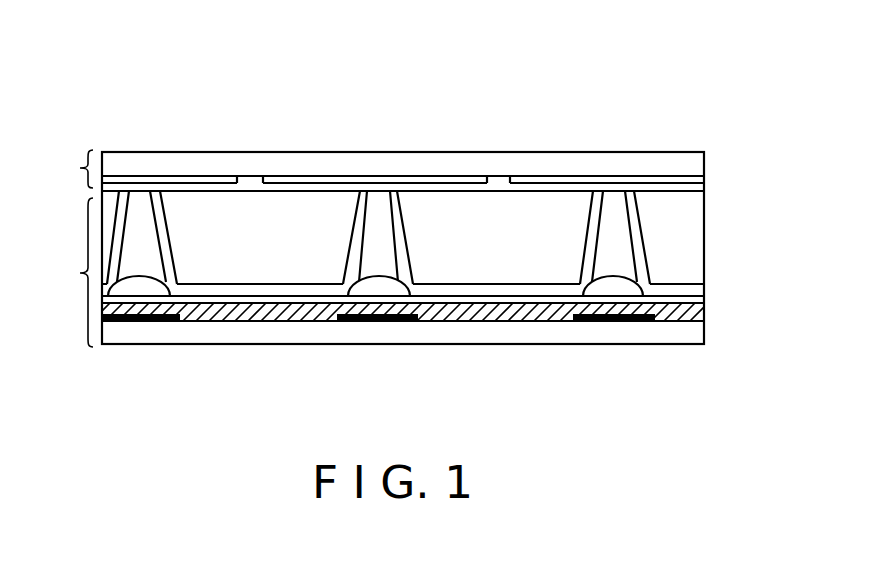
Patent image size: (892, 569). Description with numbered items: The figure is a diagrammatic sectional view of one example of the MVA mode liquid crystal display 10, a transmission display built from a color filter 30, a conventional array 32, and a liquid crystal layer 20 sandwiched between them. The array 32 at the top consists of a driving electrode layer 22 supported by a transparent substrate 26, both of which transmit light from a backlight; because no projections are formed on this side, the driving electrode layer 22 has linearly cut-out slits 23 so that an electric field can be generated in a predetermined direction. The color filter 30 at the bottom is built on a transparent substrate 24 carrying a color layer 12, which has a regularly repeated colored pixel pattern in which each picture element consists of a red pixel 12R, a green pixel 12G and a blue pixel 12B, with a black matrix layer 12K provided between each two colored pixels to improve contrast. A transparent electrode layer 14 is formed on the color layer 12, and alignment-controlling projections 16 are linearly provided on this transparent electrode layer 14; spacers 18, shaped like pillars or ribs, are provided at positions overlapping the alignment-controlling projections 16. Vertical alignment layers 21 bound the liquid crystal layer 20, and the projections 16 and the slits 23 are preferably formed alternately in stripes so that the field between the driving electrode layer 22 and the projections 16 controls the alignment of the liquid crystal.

The MVA mode liquid crystal display 10 is at (584, 55).
The color layer 12 is at (704, 310).
The red pixel 12R is at (219, 322).
The blue pixel 12B is at (455, 313).
The black matrix layer 12K is at (588, 323).
The green pixel 12G is at (678, 317).
The transparent electrode layer 14 is at (704, 297).
The alignment-controlling projections 16 is at (377, 290).
The spacers 18 is at (377, 195).
The liquid crystal layer 20 is at (505, 252).
The vertical alignment layers 21 is at (704, 190).
The driving electrode layer 22 is at (668, 182).
The slits 23 is at (252, 181).
The substrate 24 is at (140, 337).
The substrate 26 is at (577, 166).
The color filter 30 is at (65, 272).
The array 32 is at (65, 169).